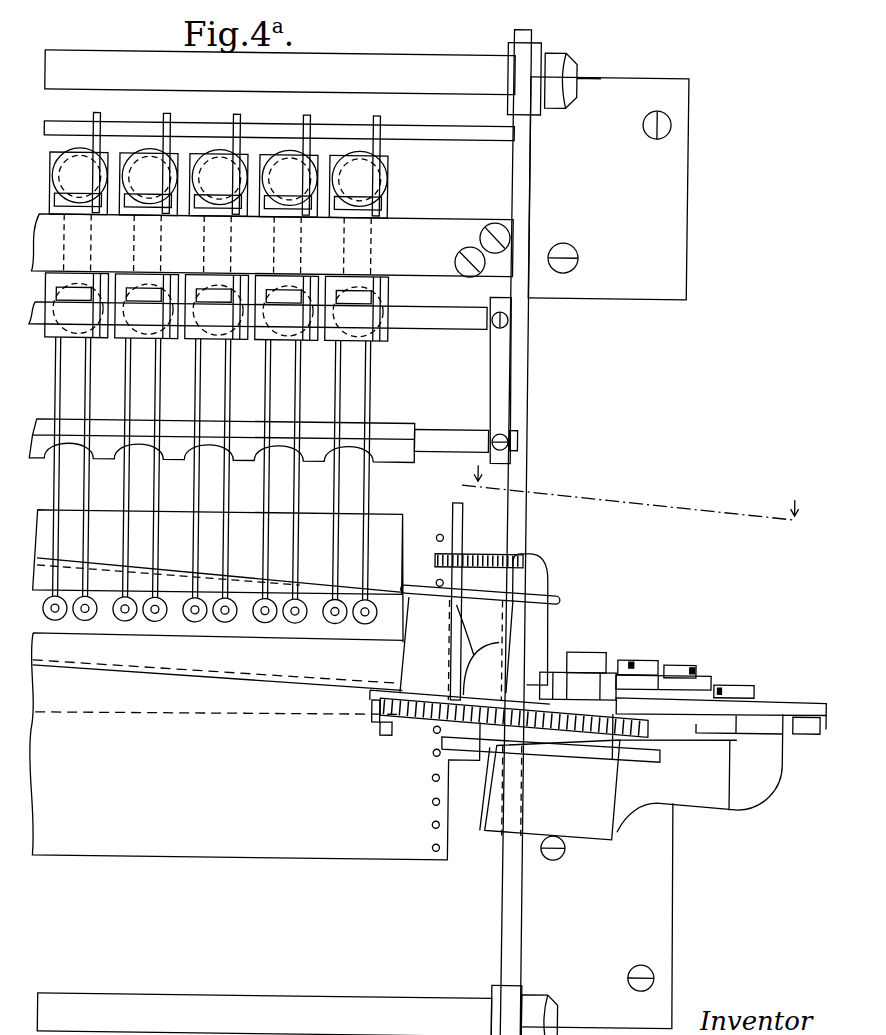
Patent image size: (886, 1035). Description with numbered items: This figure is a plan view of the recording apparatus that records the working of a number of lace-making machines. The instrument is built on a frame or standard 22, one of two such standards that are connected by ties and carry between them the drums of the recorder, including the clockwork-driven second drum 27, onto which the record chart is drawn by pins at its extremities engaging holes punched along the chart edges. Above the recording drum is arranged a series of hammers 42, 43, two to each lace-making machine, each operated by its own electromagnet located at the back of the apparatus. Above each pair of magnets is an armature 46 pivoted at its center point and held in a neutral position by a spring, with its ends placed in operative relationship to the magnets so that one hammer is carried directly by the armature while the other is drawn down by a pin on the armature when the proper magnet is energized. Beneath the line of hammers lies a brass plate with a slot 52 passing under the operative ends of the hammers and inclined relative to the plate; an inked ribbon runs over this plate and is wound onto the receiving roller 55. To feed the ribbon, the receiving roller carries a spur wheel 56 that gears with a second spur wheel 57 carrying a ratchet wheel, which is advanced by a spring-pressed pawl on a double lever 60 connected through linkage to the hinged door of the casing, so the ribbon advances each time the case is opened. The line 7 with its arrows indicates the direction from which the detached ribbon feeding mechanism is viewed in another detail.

The line 7— 7 is at (636, 491).
The frame or standard 22 is at (522, 349).
The second drum 27 is at (392, 511).
The hammer 42 is at (183, 468).
The hammer 43 is at (93, 489).
The armature 46 is at (276, 155).
The slot 52 is at (60, 621).
The receiving roller 55 is at (560, 592).
The spur wheel 56 is at (427, 736).
The second spur wheel 57 is at (580, 734).
The double lever 60 is at (778, 691).